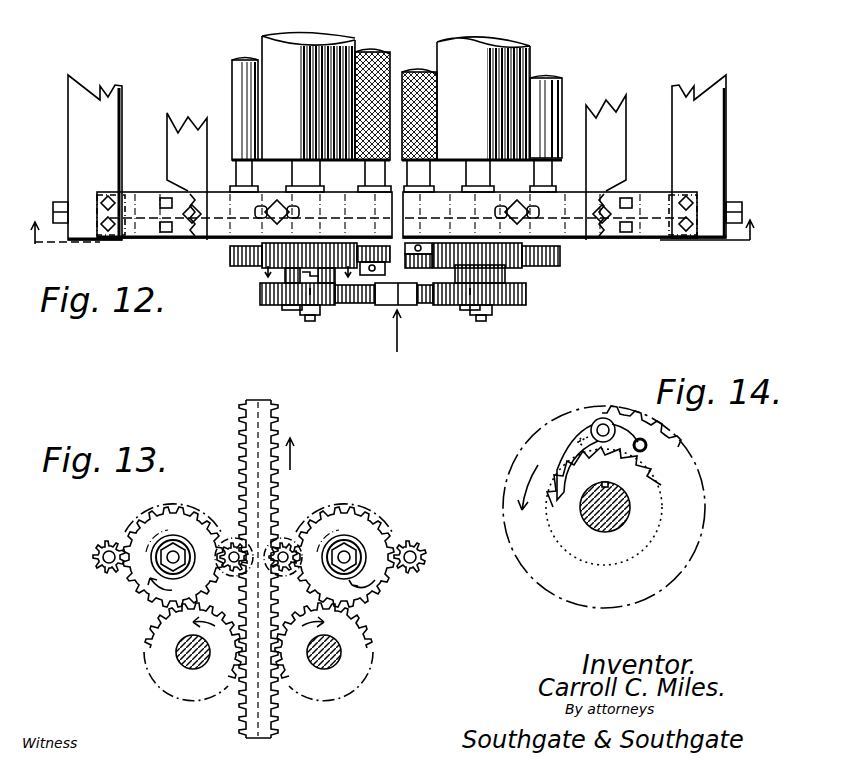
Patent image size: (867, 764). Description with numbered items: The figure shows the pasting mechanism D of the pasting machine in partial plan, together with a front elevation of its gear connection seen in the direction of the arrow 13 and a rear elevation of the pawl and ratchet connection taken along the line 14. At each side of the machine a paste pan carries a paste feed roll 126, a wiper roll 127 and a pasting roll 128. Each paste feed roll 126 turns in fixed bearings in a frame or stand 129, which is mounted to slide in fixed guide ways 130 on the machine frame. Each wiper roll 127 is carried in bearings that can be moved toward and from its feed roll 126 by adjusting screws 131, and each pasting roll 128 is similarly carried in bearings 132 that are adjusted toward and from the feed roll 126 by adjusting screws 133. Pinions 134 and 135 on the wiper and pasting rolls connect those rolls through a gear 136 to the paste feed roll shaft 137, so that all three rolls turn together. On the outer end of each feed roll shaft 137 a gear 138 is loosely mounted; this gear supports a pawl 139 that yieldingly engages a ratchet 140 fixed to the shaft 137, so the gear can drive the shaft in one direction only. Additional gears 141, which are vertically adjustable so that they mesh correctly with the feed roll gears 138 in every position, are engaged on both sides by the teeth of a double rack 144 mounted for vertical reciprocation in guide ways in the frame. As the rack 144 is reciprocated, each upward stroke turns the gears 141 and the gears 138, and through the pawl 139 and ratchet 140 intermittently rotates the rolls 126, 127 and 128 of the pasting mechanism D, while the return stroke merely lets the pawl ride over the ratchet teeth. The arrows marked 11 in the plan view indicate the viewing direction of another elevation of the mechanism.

In FIG. 12, the pasting mechanism D is at (399, 25).
In FIG. 12, the section line / roller 11 is at (388, 244).
In FIG. 13, the section line / roller 11 is at (145, 655).
In FIG. 12, the arrow 13 is at (407, 337).
In FIG. 12, the line 14 is at (314, 273).
In FIG. 12, the paste feed roll 126 is at (300, 31).
In FIG. 12, the wiper roll 127 is at (236, 58).
In FIG. 12, the pasting roll 128 is at (370, 52).
In FIG. 12, the frame or stand 129 is at (147, 190).
In FIG. 12, the guide ways / bearings 130 is at (575, 190).
In FIG. 12, the adjusting screws 131 is at (160, 204).
In FIG. 12, the bearings 132 is at (360, 192).
In FIG. 12, the adjusting screws 133 is at (160, 228).
In FIG. 12, the pinion 134 is at (230, 257).
In FIG. 13, the pinion 134 is at (260, 557).
In FIG. 12, the pinion 135 is at (410, 266).
In FIG. 13, the pinion 135 is at (230, 543).
In FIG. 12, the gear 136 is at (265, 268).
In FIG. 12, the paste feed roll shaft 137 is at (310, 322).
In FIG. 13, the paste feed roll shaft 137 is at (174, 552).
In FIG. 14, the paste feed roll shaft 137 is at (607, 528).
In FIG. 12, the gear 138 is at (268, 305).
In FIG. 13, the gear 138 is at (372, 510).
In FIG. 14, the gear 138 is at (704, 484).
In FIG. 12, the pawl 139 is at (318, 290).
In FIG. 14, the pawl 139 is at (562, 447).
In FIG. 12, the ratchet 140 is at (515, 283).
In FIG. 14, the ratchet 140 is at (556, 505).
In FIG. 12, the gears 141 is at (365, 305).
In FIG. 13, the gears 141 is at (373, 648).
In FIG. 12, the double rack 144 is at (403, 305).
In FIG. 13, the double rack 144 is at (278, 559).